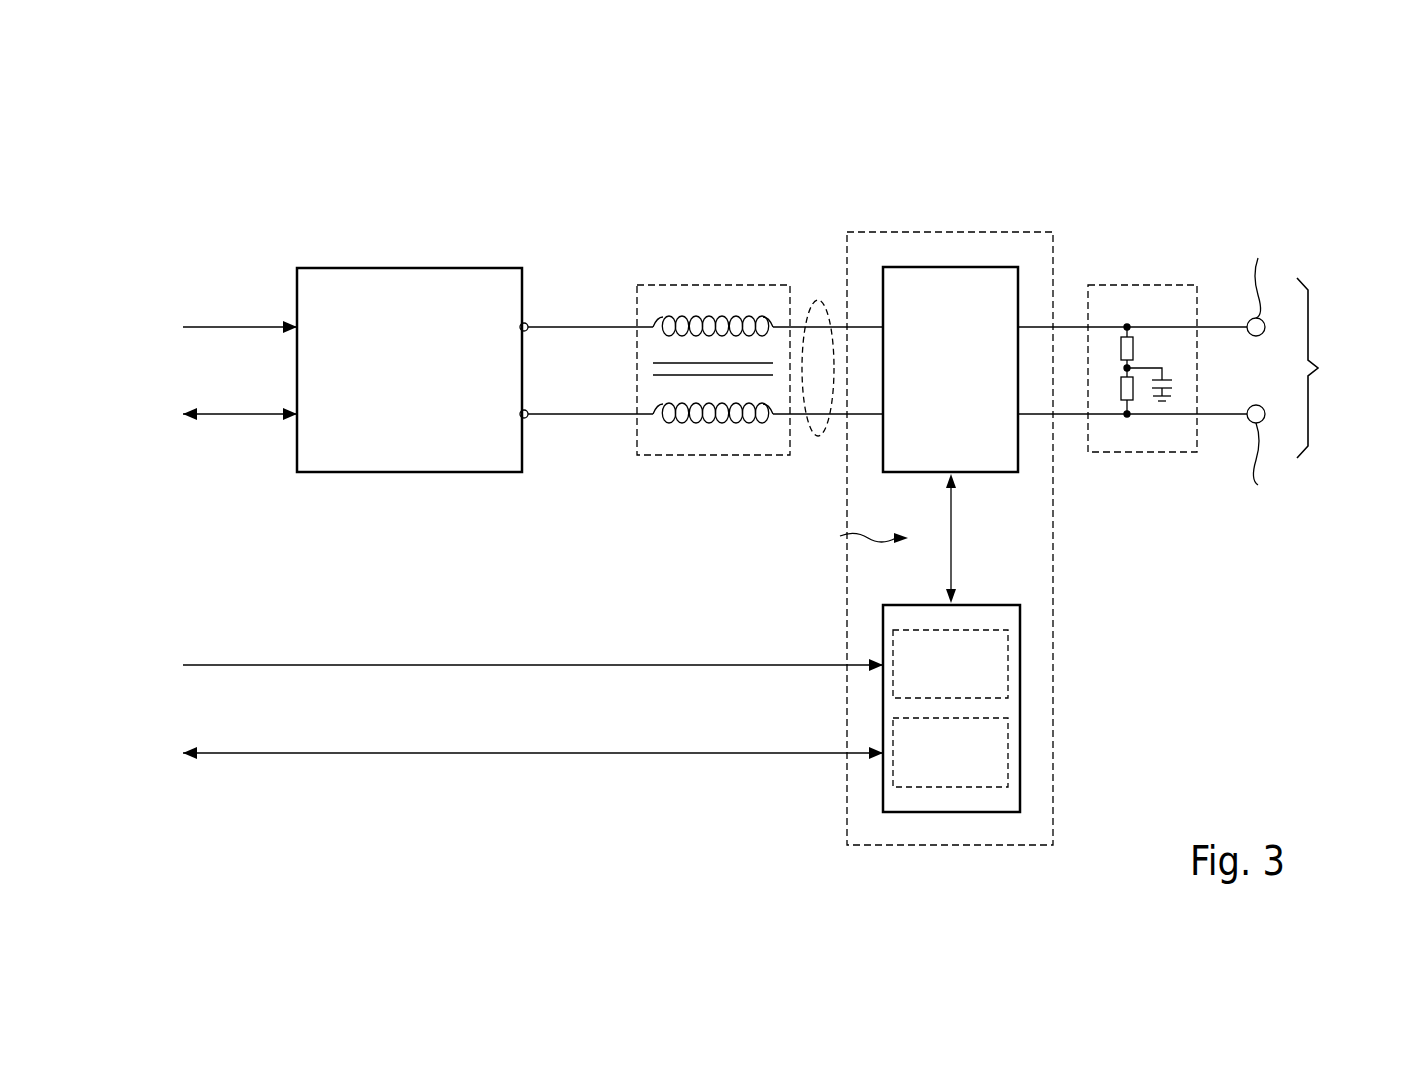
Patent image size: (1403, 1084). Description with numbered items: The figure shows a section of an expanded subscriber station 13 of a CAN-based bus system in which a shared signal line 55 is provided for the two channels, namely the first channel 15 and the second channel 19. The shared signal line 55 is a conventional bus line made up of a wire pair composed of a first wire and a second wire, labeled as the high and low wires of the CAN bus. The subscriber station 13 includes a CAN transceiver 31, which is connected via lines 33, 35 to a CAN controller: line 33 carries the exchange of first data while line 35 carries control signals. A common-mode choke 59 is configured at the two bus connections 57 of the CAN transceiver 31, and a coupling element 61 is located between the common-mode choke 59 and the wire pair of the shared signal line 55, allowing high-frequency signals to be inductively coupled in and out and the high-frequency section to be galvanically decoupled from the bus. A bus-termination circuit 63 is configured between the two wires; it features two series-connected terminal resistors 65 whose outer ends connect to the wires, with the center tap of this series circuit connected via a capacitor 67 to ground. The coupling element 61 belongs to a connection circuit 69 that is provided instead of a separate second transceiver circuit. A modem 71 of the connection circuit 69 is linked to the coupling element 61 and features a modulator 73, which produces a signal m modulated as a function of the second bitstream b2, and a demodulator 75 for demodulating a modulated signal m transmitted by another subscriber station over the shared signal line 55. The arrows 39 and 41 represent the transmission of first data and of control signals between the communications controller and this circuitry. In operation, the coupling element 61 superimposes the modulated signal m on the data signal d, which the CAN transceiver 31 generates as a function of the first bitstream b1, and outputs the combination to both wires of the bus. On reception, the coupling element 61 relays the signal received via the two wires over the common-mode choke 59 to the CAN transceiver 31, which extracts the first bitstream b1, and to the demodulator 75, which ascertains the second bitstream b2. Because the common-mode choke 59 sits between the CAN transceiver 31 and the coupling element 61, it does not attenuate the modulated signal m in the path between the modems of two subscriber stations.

The subscriber station 13 is at (205, 208).
The first channel 15 is at (1296, 208).
The second channel 19 is at (1325, 218).
The CAN transceiver 31 is at (408, 268).
The arrow / line 33 is at (227, 416).
The arrow / line 35 is at (225, 327).
The arrow 39 is at (228, 754).
The arrow 41 is at (227, 665).
The shared signal line 55 is at (1300, 368).
The bus connections 57 is at (529, 325).
The common-mode choke 59 is at (712, 285).
The coupling element 61 is at (893, 267).
The bus-termination circuit 63 is at (1140, 285).
The terminal resistors 65 is at (1120, 348).
The capacitor 67 is at (1174, 386).
The connection circuit 69 is at (948, 232).
The modem 71 is at (1022, 621).
The modulator 73 is at (1010, 673).
The demodulator 75 is at (1010, 762).
The first bitstream b1 is at (826, 300).
The second bitstream b2 is at (858, 534).
The data signal d is at (812, 452).
The modulated signal m is at (965, 538).